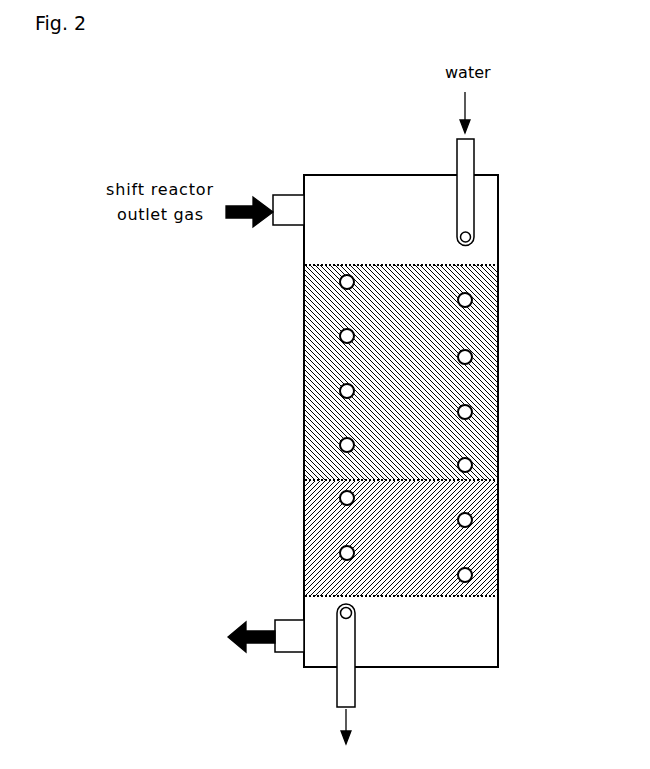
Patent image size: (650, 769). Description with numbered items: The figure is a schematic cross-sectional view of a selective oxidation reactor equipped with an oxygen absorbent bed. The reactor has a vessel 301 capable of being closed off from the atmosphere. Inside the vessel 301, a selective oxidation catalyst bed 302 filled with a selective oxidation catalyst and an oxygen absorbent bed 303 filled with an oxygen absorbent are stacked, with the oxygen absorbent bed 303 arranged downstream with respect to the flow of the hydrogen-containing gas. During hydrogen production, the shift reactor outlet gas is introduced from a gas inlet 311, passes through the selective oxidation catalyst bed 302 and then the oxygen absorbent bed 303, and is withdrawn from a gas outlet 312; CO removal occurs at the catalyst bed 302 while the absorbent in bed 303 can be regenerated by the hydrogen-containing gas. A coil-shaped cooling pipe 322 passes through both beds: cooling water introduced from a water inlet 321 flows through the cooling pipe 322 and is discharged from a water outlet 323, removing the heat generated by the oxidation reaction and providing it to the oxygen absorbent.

The vessel 301 is at (497, 203).
The selective oxidation catalyst bed 302 is at (487, 361).
The oxygen absorbent bed 303 is at (498, 530).
The gas inlet 311 is at (284, 195).
The gas outlet 312 is at (290, 620).
The water inlet 321 is at (458, 160).
The coil-shaped cooling pipe 322 is at (338, 393).
The water outlet 323 is at (356, 675).